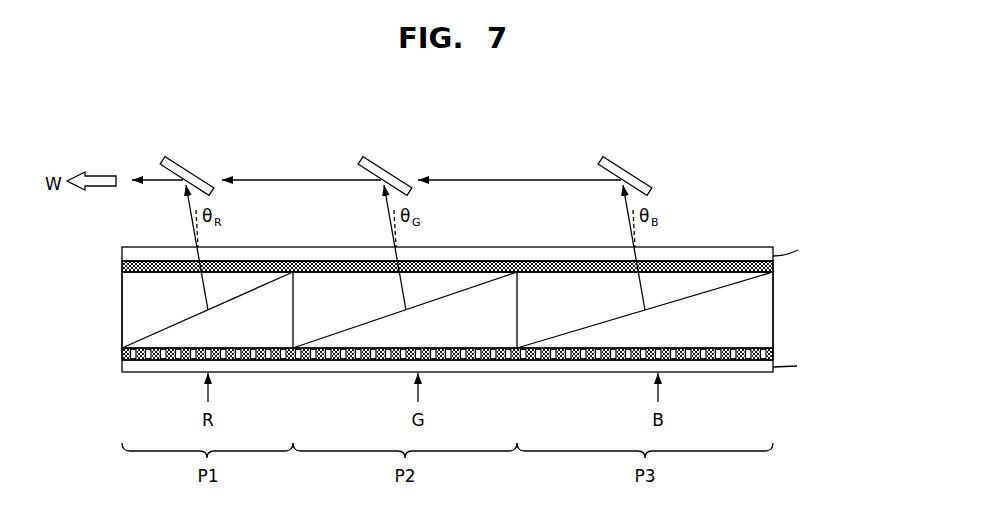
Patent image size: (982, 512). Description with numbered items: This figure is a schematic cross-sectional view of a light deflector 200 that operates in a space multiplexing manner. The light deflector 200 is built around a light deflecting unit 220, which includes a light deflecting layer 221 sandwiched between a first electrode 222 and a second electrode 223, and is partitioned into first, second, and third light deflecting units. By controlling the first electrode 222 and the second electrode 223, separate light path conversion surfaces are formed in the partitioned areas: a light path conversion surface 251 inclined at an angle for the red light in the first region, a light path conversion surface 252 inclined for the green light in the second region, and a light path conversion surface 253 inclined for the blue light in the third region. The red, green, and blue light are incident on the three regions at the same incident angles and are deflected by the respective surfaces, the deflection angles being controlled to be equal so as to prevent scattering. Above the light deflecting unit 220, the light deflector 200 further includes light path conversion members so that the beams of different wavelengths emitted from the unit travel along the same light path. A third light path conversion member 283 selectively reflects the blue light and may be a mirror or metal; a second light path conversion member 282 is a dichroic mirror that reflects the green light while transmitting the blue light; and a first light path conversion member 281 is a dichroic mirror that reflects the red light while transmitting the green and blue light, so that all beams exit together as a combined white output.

The light deflector 200 is at (766, 211).
The light deflecting unit 220 is at (838, 263).
The light deflecting layer 221 is at (773, 303).
The first electrode 222 is at (773, 354).
The second electrode 223 is at (773, 268).
The light path conversion surface 251 is at (254, 289).
The light path conversion surface 252 is at (457, 292).
The light path conversion surface 253 is at (696, 295).
The first light path conversion member 281 is at (172, 158).
The second light path conversion member 282 is at (372, 158).
The third light path conversion member 283 is at (612, 158).